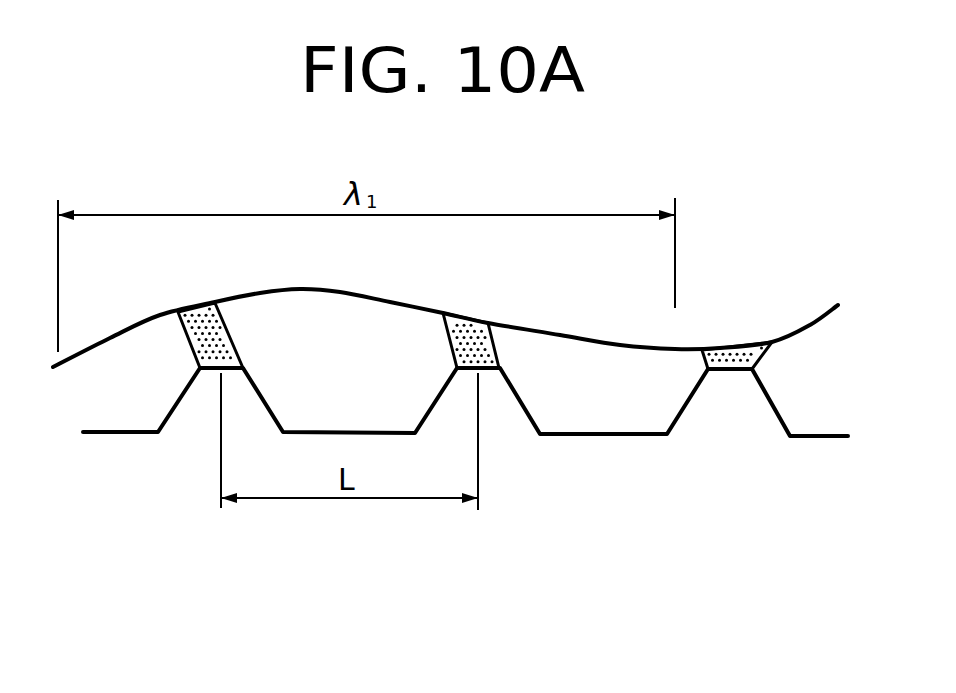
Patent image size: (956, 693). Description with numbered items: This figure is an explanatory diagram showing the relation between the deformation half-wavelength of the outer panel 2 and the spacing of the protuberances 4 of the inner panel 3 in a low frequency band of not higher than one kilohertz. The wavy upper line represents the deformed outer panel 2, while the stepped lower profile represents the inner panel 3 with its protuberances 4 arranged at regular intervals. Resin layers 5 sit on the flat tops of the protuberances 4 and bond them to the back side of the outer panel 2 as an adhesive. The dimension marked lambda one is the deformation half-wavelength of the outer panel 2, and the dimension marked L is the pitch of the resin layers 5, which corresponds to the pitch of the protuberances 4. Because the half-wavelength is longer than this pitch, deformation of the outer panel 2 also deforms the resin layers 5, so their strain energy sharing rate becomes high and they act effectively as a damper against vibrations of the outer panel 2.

The outer panel 2 is at (676, 346).
The inner panel 3 is at (606, 438).
The protuberances 4 is at (731, 387).
The resin layers 5 is at (463, 323).